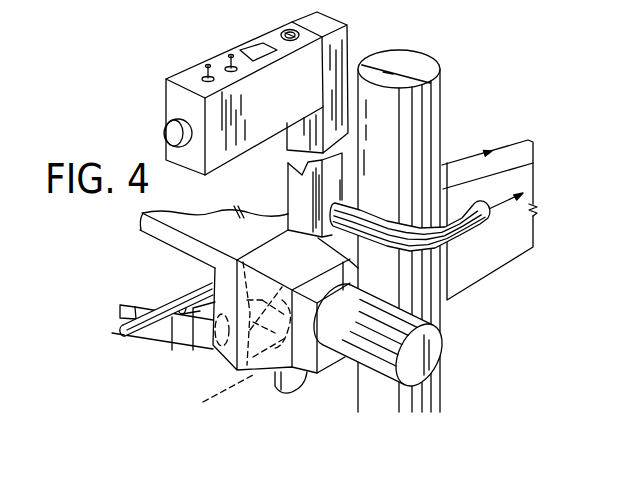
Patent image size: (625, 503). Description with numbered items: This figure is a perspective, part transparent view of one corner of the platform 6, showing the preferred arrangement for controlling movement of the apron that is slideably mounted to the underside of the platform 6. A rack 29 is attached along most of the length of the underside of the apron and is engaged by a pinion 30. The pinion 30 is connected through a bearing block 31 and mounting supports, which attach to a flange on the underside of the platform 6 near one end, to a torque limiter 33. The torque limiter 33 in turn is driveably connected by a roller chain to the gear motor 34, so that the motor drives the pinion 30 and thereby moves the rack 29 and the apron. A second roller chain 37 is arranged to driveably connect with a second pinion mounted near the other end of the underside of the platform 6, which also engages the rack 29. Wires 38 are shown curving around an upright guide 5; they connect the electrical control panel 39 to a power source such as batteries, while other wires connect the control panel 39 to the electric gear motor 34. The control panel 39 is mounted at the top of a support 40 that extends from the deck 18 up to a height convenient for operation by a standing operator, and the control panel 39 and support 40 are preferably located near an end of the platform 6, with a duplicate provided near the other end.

The upright guide 5 is at (440, 102).
The platform 6 is at (515, 252).
The deck 18 is at (490, 152).
The rack 29 is at (121, 330).
The pinion 30 is at (170, 332).
The bearing block 31 is at (197, 340).
The torque limiter 33 is at (287, 393).
The gear motor 34 is at (438, 336).
The second roller chain 37 is at (240, 257).
The wires 38 is at (460, 240).
The control panel 39 is at (292, 112).
The support 40 is at (342, 57).